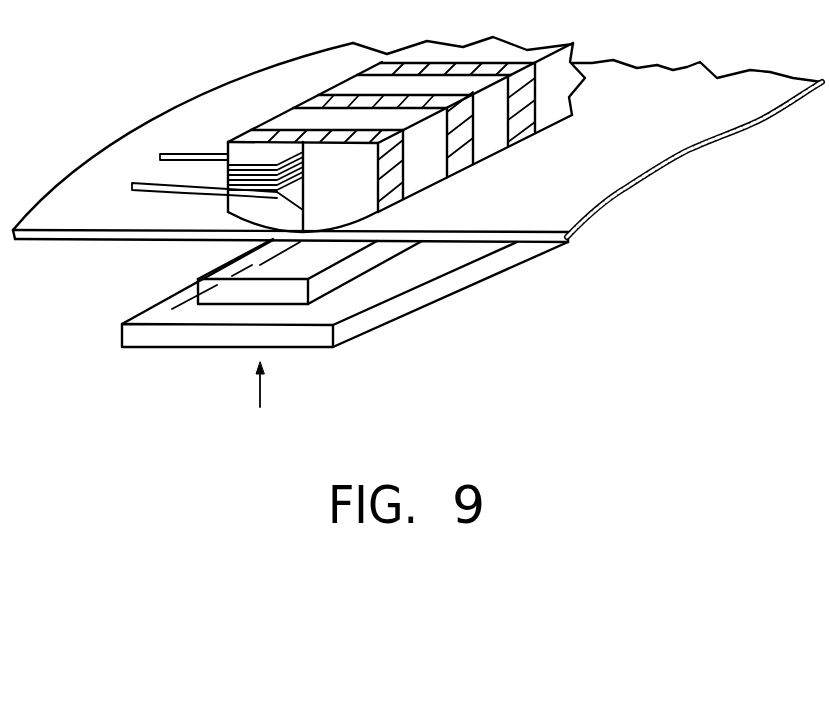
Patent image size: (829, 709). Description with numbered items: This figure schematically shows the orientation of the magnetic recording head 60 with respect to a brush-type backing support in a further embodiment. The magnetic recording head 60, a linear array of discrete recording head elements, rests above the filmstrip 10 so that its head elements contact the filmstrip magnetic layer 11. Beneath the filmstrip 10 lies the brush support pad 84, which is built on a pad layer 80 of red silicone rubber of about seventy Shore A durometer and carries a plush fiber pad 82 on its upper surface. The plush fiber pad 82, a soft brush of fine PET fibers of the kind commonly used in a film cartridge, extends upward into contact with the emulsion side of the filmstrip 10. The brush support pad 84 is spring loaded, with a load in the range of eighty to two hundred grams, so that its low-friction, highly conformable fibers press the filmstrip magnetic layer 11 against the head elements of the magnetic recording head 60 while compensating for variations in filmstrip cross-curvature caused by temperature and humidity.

The filmstrip 10 is at (610, 182).
The filmstrip magnetic layer 11 is at (130, 145).
The magnetic recording head 60 is at (277, 73).
The pad layer 80 is at (420, 295).
The plush fiber pad 82 is at (198, 280).
The brush support pad 84 is at (393, 334).